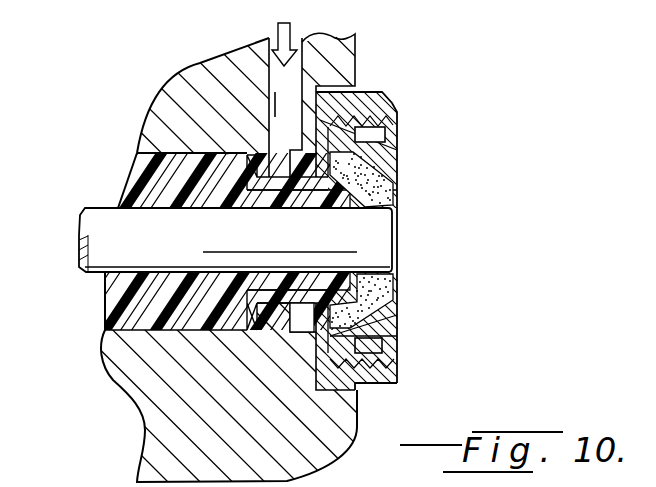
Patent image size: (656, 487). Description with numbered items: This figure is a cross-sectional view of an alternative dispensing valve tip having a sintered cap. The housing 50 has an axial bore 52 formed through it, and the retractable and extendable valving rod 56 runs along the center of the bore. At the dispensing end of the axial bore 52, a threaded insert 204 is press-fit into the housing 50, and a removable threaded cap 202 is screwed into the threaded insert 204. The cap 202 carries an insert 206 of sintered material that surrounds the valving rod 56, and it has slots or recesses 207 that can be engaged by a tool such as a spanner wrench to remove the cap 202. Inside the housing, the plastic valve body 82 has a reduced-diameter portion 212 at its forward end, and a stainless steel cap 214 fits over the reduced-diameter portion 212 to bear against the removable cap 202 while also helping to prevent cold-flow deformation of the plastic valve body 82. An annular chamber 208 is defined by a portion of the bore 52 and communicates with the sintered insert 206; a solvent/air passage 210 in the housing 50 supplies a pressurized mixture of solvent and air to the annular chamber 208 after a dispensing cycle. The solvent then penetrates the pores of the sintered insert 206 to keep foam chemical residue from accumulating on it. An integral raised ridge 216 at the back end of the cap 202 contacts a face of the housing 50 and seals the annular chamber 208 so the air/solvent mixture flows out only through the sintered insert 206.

The second housing 50 is at (196, 72).
The axial bore 52 is at (281, 175).
The valving rod 56 is at (97, 228).
The plastic valve body 82 is at (132, 178).
The removable threaded cap 202 is at (385, 322).
The threaded insert 204 is at (388, 107).
The sintered insert 206 is at (380, 290).
The slots or recesses 207 is at (385, 134).
The annular chamber 208 is at (300, 318).
The solvent/air passage 210 is at (289, 82).
The reduced-diameter portion 212 is at (383, 197).
The stainless steel cap 214 is at (253, 177).
The integral raised ridge 216 is at (397, 153).